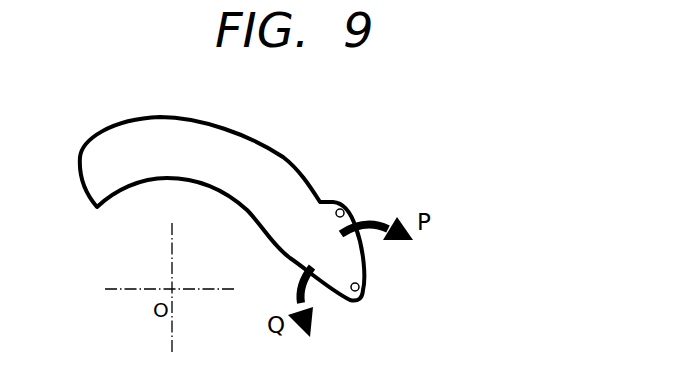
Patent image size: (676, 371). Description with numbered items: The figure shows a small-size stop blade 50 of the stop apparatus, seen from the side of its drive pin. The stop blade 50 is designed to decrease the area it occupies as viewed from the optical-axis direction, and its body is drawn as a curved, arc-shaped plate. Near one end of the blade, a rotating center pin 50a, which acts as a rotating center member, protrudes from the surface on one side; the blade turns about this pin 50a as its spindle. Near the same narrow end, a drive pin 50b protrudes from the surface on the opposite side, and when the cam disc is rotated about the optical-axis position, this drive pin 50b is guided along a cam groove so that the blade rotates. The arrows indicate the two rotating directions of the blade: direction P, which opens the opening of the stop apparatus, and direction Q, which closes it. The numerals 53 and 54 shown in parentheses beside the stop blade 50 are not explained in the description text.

The small-size stop blade 50 is at (246, 191).
The slider 53 is at (222, 209).
The slider 54 is at (242, 145).
The rotating center pin 50a is at (360, 287).
The drive pin 50b is at (343, 207).